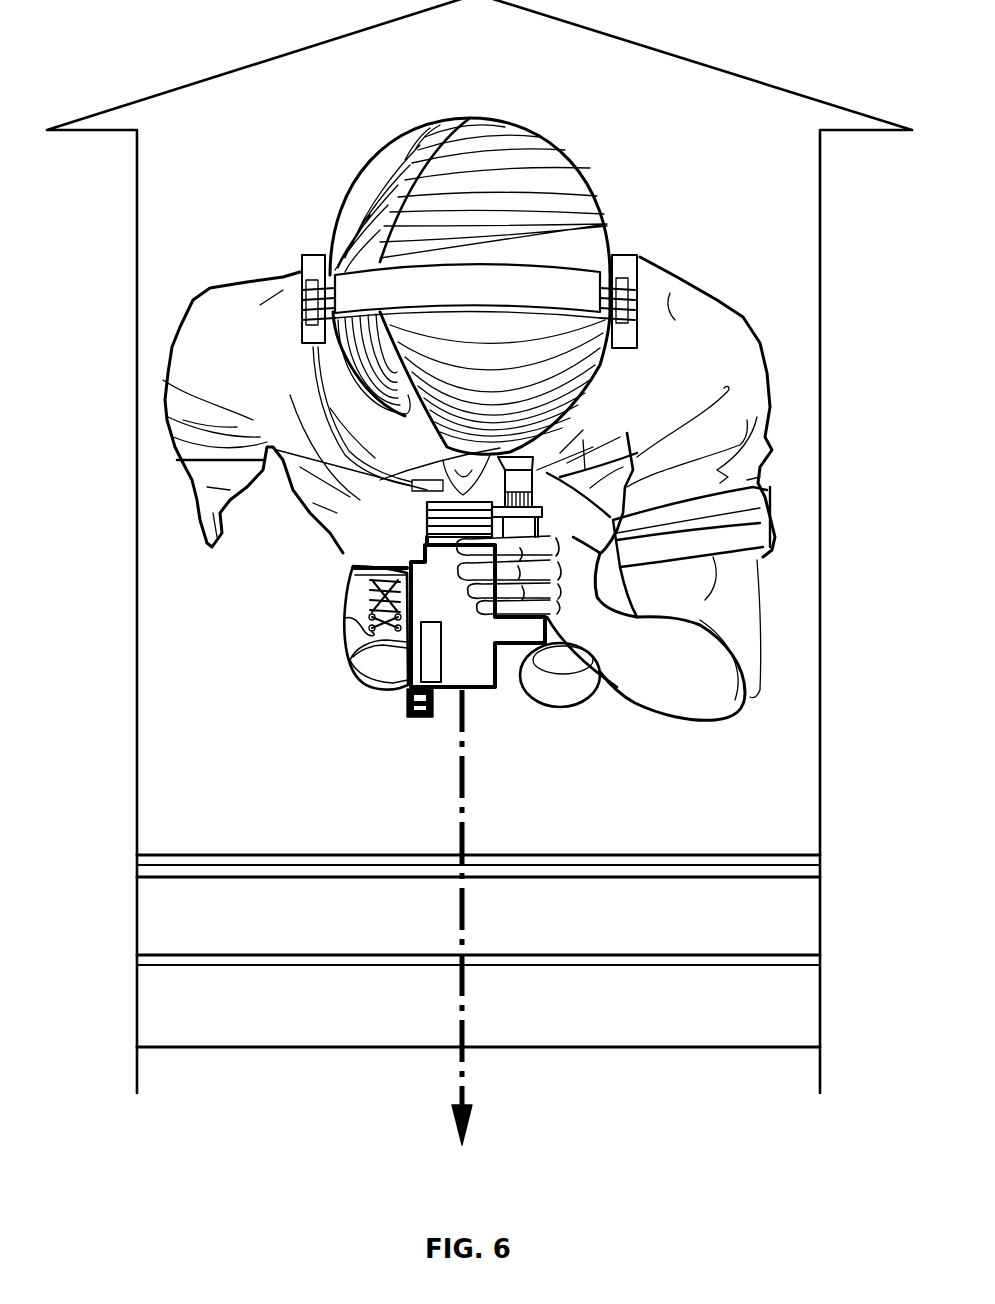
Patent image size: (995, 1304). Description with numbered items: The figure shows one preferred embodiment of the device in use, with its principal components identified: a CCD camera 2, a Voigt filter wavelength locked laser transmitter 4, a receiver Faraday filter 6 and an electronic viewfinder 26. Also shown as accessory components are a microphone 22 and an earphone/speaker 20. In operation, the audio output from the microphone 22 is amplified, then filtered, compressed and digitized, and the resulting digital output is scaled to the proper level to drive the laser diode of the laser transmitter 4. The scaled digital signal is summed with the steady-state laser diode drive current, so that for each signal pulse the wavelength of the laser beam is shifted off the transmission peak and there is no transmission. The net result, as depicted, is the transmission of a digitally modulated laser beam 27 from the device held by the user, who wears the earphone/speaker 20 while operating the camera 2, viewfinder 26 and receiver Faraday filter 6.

The CCD camera 2 is at (418, 725).
The Voigt filter wavelength locked laser transmitter 4 is at (482, 689).
The receiver Faraday filter 6 is at (620, 690).
The earphone/speaker 20 is at (637, 325).
The microphone 22 is at (413, 497).
The electronic viewfinder 26 is at (545, 512).
The digitally modulated laser beam 27 is at (464, 902).